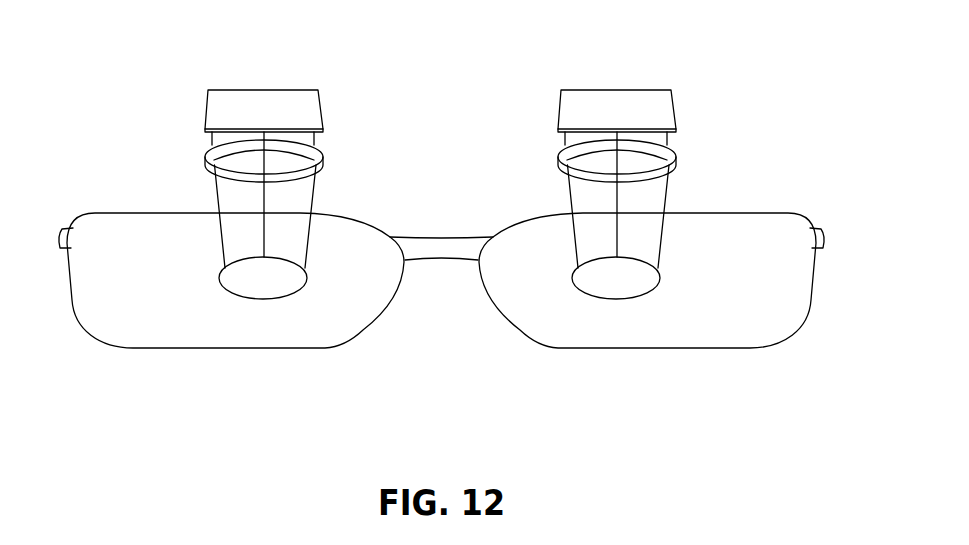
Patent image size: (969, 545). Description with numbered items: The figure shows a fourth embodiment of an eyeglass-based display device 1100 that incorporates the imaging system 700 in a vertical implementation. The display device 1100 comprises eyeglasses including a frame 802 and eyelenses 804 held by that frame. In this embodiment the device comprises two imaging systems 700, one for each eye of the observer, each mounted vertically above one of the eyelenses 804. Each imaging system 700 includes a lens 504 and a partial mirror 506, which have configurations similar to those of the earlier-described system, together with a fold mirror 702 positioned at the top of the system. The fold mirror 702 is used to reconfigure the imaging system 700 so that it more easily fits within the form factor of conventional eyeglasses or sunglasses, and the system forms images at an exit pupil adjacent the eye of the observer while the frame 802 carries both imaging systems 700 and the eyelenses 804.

The eyeglass-based display device 1100 is at (796, 97).
The imaging system 700 is at (178, 88).
The fold mirror 702 is at (308, 98).
The lens 504 is at (322, 157).
The partial mirror 506 is at (300, 278).
The frame 802 is at (439, 245).
The eyelenses 804 is at (380, 303).